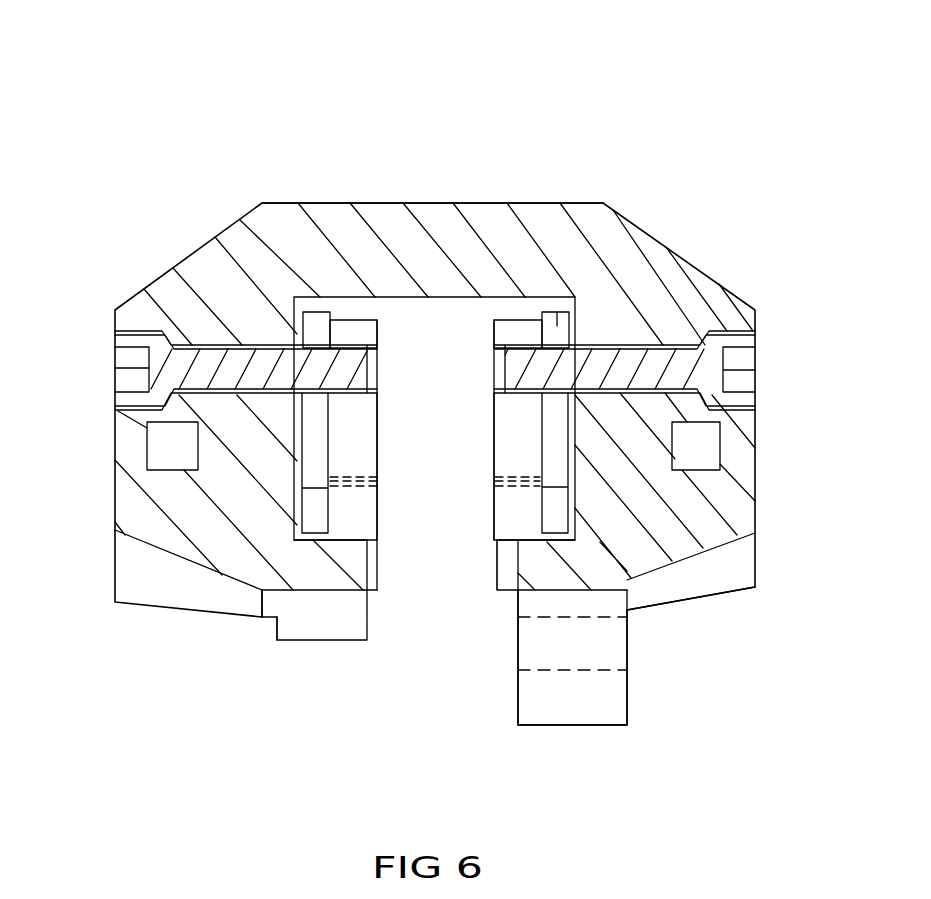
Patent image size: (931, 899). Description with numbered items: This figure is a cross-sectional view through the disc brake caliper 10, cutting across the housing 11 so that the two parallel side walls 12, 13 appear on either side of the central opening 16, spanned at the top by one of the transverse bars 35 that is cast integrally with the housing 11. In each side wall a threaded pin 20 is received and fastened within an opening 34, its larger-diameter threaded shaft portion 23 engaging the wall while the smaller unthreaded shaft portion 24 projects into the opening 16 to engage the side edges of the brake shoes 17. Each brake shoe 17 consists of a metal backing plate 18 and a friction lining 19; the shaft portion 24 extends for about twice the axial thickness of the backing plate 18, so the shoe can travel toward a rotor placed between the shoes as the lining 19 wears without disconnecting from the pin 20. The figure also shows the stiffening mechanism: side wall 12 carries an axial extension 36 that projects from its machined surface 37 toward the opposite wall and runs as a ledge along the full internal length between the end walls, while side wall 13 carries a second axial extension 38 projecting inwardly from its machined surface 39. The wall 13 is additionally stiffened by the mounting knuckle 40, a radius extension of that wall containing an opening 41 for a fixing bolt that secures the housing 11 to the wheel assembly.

The disc brake caliper 10 is at (254, 97).
The housing 11 is at (147, 287).
The side wall 12 is at (115, 490).
The side wall 13 is at (757, 490).
The opening 16 is at (456, 337).
The brake shoes 17 is at (330, 483).
The backing plate 18 is at (313, 312).
The friction lining 19 is at (355, 320).
The threaded pins 20 is at (253, 365).
The threaded shaft portion 23 is at (190, 422).
The non-threaded shaft portion 24 is at (522, 395).
The openings 34 is at (135, 357).
The bar 35 is at (430, 203).
The axial extension 36 is at (330, 568).
The machined surface 37 is at (317, 475).
The second axial extension 38 is at (552, 573).
The machined surface 39 is at (562, 525).
The mounting knuckle 40 is at (600, 727).
The opening 41 is at (605, 662).